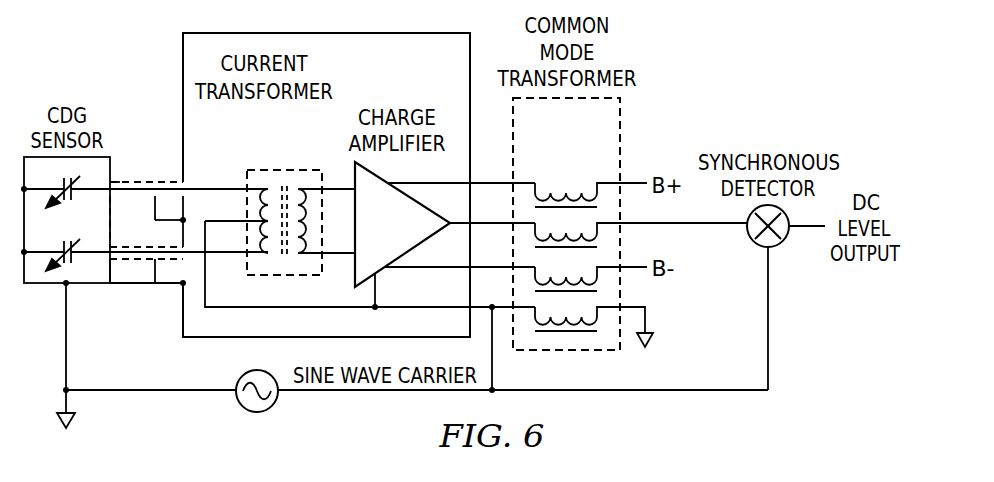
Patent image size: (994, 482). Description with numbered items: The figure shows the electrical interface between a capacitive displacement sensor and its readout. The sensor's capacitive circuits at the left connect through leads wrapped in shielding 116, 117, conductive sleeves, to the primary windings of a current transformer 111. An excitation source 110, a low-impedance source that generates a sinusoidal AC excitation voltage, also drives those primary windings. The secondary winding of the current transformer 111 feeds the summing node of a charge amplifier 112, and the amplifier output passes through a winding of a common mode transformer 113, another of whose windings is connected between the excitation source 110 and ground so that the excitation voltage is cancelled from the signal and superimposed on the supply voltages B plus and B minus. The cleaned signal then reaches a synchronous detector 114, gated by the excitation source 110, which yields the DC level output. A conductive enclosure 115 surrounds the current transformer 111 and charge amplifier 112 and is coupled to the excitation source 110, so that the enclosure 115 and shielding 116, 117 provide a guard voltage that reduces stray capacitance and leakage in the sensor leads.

The excitation source 110 is at (253, 412).
The current transformer 111 is at (274, 165).
The charge amplifier 112 is at (370, 236).
The common mode transformer 113 is at (585, 151).
The synchronous detector 114 is at (775, 248).
The conductive enclosure 115 is at (183, 66).
The shielding 116 is at (137, 182).
The shielding 117 is at (135, 262).